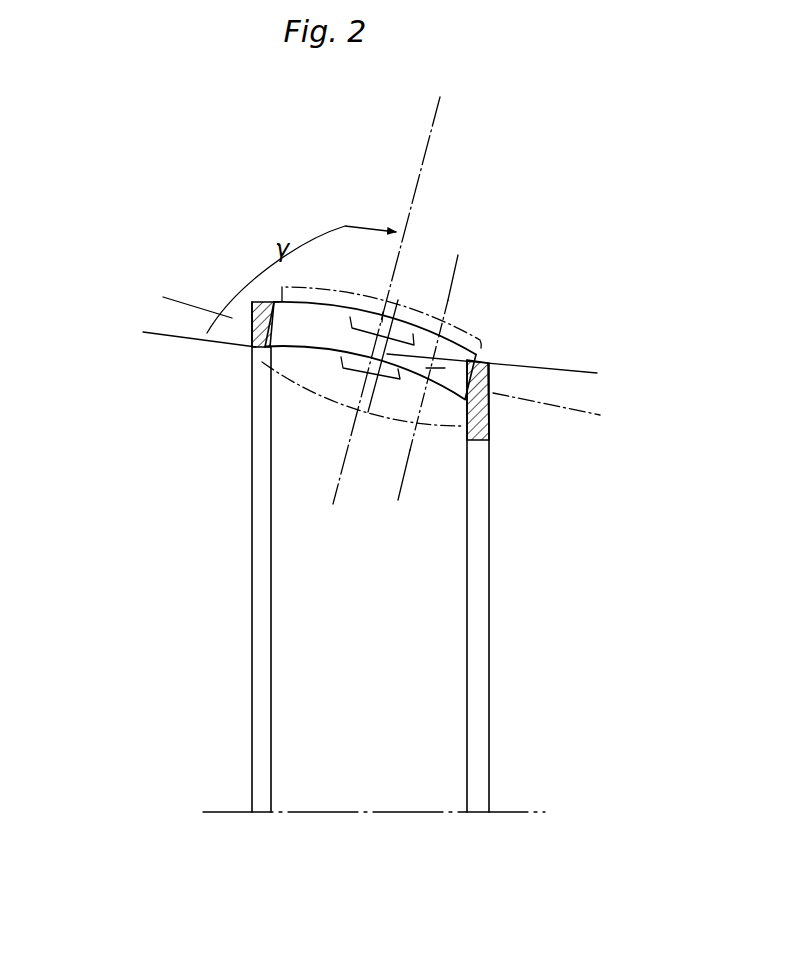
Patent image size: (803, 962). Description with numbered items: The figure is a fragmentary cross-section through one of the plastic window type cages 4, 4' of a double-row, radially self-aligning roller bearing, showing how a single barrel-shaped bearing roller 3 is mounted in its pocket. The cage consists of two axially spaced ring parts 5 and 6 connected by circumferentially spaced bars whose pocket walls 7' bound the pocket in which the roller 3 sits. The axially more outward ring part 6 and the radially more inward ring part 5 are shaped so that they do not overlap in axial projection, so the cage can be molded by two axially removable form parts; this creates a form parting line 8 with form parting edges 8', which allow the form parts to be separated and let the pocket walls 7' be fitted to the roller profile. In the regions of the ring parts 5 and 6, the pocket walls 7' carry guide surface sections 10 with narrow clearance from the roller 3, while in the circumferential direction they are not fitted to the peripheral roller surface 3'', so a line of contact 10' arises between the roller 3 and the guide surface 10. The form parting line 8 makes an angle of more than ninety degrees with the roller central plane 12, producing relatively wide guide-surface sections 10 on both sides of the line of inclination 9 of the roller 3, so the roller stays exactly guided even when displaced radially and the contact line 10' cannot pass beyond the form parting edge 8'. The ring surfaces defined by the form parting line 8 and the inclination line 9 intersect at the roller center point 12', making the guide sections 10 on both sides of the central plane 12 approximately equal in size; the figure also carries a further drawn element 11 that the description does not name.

The barrel-shaped bearing roller 3 is at (306, 340).
The peripheral roller surface 3'' is at (333, 494).
The window type cage 4 is at (347, 343).
The window type cage 4' is at (349, 557).
The ring part 5 is at (252, 306).
The ring part 6 is at (490, 375).
The pocket wall 7' is at (366, 393).
The form parting line 8 is at (478, 313).
The form parting edge 8' is at (361, 335).
The line of inclination 9 is at (163, 297).
The guide surface section 10 is at (370, 347).
The line of contact 10' is at (379, 293).
The pin 11 is at (377, 358).
The roller central plane 12 is at (395, 287).
The roller center point 12' is at (365, 457).